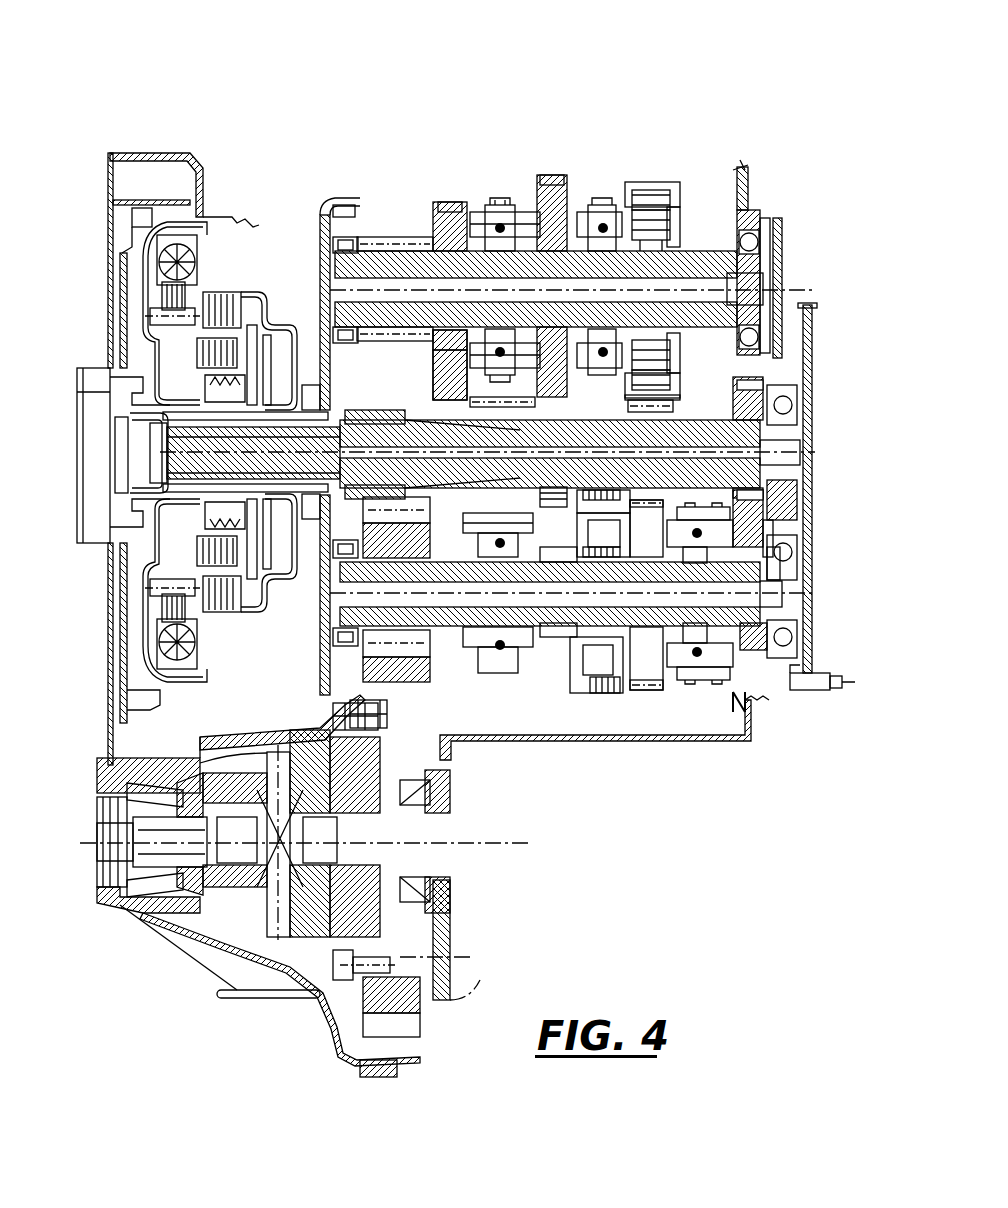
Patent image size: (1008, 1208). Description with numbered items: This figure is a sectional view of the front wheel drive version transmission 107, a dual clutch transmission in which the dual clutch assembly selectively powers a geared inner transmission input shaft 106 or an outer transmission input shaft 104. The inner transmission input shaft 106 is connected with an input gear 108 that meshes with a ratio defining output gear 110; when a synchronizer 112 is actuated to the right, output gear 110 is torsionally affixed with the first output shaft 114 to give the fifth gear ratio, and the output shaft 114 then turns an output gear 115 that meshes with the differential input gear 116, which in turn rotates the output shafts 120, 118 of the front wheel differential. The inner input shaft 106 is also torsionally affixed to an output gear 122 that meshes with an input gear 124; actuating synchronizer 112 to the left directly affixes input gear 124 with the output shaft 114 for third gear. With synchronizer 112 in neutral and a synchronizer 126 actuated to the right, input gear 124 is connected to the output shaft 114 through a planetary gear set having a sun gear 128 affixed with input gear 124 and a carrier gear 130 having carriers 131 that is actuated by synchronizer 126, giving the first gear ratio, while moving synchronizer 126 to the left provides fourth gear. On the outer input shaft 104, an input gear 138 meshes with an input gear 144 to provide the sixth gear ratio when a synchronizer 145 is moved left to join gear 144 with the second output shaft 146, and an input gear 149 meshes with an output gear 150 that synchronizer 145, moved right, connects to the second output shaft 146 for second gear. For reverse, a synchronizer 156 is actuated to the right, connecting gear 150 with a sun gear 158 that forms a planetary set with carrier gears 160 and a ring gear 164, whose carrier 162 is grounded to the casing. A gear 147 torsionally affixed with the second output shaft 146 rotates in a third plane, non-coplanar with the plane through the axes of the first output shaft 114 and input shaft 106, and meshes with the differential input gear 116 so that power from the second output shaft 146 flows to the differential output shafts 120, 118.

The outer transmission input shaft 104 is at (322, 362).
The inner transmission input shaft 106 is at (618, 422).
The transmission 107 is at (524, 100).
The input gear 108 is at (753, 382).
The output gear 110 is at (797, 572).
The synchronizer 112 is at (698, 503).
The first output shaft 114 is at (553, 683).
The output gear 115 is at (420, 645).
The differential input gear 116 is at (410, 677).
The output shaft 118 is at (393, 838).
The output shaft 120 is at (160, 840).
The output gear 122 is at (662, 408).
The input gear 124 is at (637, 510).
The synchronizer 126 is at (512, 503).
The sun gear 128 is at (572, 542).
The carrier gear 130 is at (575, 500).
The carriers 131 is at (585, 520).
The input gear 138 is at (432, 393).
The input gear 144 is at (438, 348).
The synchronizer 145 is at (505, 212).
The second output shaft 146 is at (441, 242).
The gear 147 is at (338, 225).
The input gear 149 is at (540, 398).
The output gear 150 is at (548, 212).
The synchronizer 156 is at (612, 205).
The sun gear 158 is at (753, 272).
The carrier gears 160 is at (668, 217).
The carrier 162 is at (645, 178).
The ring gear 164 is at (655, 193).